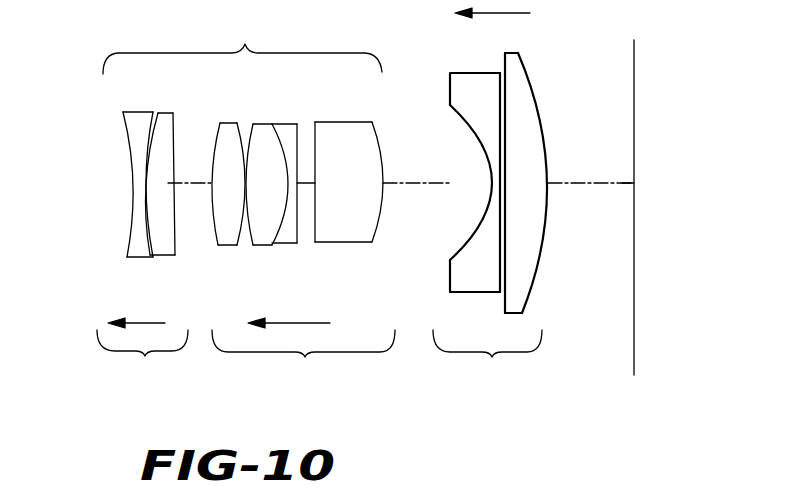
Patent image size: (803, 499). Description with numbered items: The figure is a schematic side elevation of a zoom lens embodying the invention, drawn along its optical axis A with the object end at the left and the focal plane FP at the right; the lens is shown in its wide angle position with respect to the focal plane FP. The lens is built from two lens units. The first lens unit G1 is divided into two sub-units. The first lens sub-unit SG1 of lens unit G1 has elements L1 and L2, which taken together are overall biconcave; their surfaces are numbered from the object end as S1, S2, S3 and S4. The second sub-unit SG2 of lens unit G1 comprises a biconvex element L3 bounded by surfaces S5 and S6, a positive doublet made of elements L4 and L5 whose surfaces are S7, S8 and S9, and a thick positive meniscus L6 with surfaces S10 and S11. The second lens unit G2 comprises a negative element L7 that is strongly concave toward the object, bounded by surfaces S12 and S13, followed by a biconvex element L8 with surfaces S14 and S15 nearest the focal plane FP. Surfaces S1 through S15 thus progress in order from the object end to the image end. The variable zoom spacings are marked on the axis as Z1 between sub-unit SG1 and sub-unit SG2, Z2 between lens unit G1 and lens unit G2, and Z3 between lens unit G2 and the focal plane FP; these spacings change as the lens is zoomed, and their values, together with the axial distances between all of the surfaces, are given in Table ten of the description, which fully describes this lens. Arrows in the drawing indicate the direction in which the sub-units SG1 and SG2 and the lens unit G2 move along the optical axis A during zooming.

The lens element L1 is at (116, 188).
The lens element L2 is at (179, 187).
The biconvex element L3 is at (218, 188).
The doublet element L4 is at (279, 189).
The doublet element L5 is at (312, 193).
The thick positive meniscus L6 is at (374, 178).
The negative element L7 is at (512, 186).
The biconvex element L8 is at (553, 171).
The lens surface S1 is at (120, 242).
The lens surface S2 is at (150, 240).
The lens surface S3 is at (151, 262).
The lens surface S4 is at (178, 248).
The lens surface S5 is at (216, 231).
The lens surface S6 is at (243, 246).
The lens surface S7 is at (256, 246).
The lens surface S8 is at (286, 236).
The lens surface S9 is at (300, 230).
The lens surface S10 is at (313, 212).
The lens surface S11 is at (383, 222).
The lens surface S12 is at (473, 243).
The lens surface S13 is at (497, 274).
The lens surface S14 is at (503, 270).
The lens surface S15 is at (548, 228).
The lens unit G1 is at (242, 48).
The lens unit G2 is at (487, 356).
The lens sub-unit SG1 is at (142, 355).
The lens sub-unit SG2 is at (303, 355).
The variable zoom spacing Z1 is at (190, 171).
The variable zoom spacing Z2 is at (416, 171).
The variable zoom spacing Z3 is at (591, 170).
The focal plane FP is at (634, 112).
The optical axis A is at (624, 183).